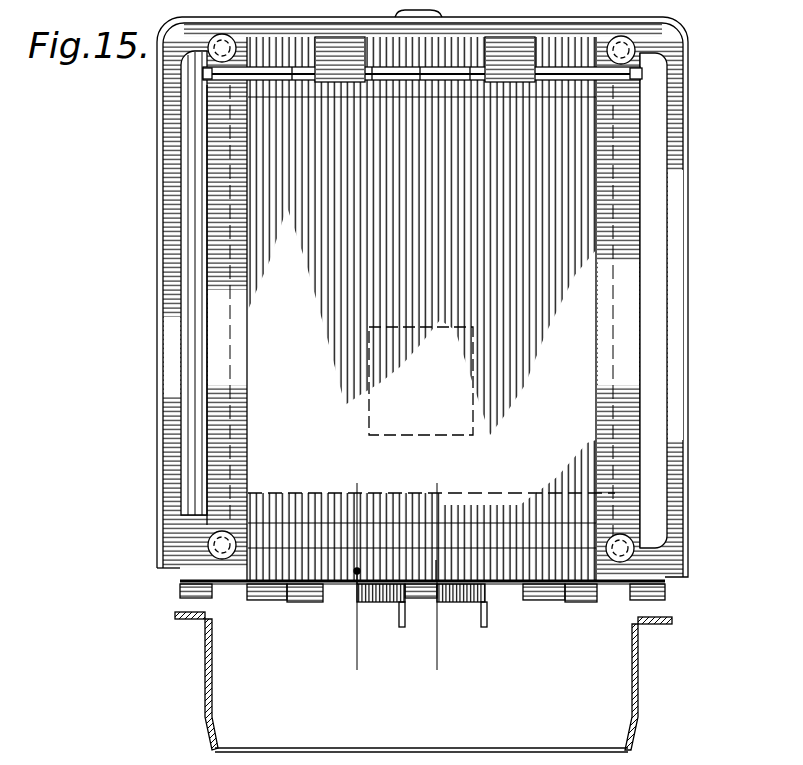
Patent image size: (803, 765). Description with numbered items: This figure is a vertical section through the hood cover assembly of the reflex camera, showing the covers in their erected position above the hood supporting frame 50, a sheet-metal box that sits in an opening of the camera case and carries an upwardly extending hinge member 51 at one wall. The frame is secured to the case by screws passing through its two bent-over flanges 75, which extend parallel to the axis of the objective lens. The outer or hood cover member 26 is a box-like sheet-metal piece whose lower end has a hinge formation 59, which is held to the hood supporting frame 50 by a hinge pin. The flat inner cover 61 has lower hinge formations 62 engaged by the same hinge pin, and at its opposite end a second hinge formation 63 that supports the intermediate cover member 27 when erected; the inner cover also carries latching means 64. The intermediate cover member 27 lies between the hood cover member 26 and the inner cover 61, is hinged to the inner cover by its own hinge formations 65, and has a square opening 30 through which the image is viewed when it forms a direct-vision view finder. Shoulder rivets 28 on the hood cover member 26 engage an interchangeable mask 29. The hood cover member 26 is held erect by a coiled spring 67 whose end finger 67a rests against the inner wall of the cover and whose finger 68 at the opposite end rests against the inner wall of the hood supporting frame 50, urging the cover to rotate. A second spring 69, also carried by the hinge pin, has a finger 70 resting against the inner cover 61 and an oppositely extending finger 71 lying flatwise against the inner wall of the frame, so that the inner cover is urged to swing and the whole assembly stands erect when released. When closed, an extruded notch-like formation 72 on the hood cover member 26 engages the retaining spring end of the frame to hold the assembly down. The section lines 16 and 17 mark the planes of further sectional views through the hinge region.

The section line 16- 16 is at (346, 479).
The section line 17- 17 is at (433, 479).
The hood cover member 26 is at (690, 306).
The intermediate cover member 27 is at (634, 262).
The shoulder rivets 28 is at (208, 52).
The mask 29 is at (658, 378).
The square opening 30 is at (470, 436).
The hood supporting frame 50 is at (630, 682).
The hinge member 51 is at (244, 588).
The hinge formation 59 is at (185, 590).
The inner cover 61 is at (590, 349).
The lower hinge formation 62 is at (268, 600).
The second hinge formation 63 is at (426, 72).
The latching means 64 is at (318, 40).
The hinge formation 65 is at (375, 70).
The coiled spring 67 is at (467, 602).
The end finger 67a is at (435, 580).
The finger 68 is at (481, 626).
The second spring 69 is at (382, 602).
The finger 70 is at (354, 570).
The oppositely extending finger 71 is at (399, 625).
The extruded notch-like formation 72 is at (432, 17).
The bent-over flanges 75 is at (188, 619).